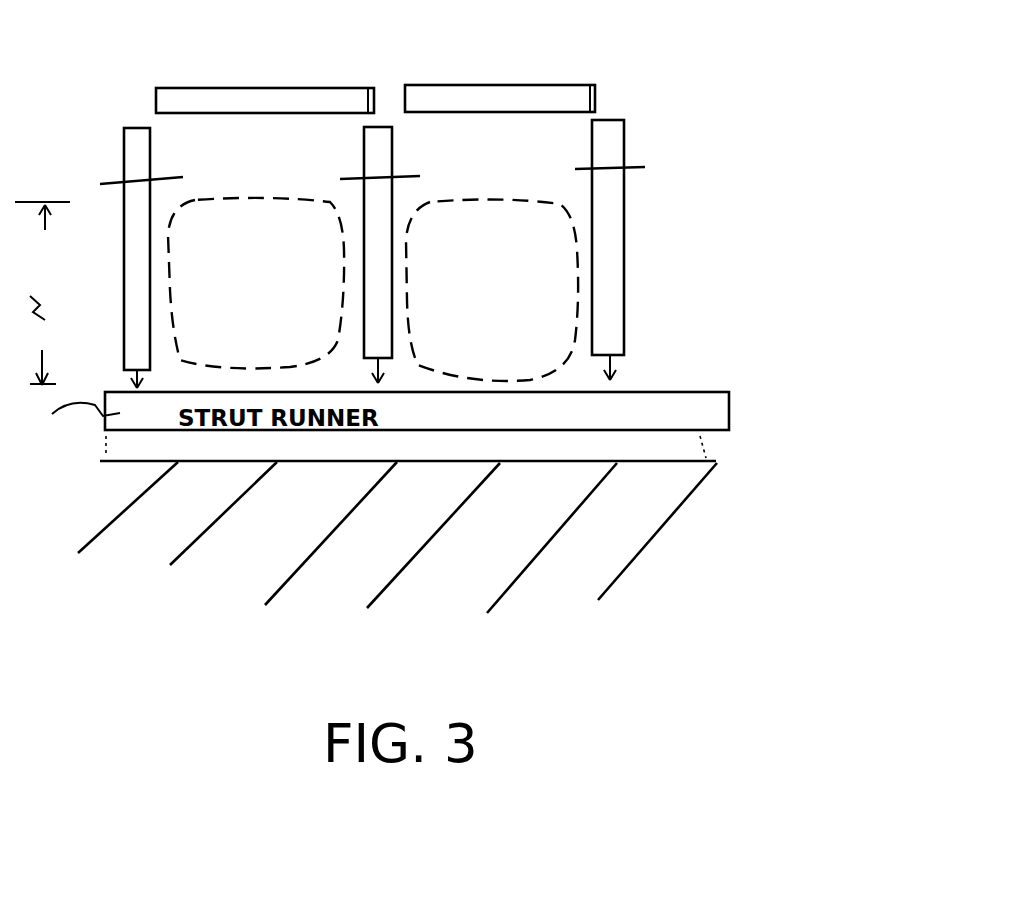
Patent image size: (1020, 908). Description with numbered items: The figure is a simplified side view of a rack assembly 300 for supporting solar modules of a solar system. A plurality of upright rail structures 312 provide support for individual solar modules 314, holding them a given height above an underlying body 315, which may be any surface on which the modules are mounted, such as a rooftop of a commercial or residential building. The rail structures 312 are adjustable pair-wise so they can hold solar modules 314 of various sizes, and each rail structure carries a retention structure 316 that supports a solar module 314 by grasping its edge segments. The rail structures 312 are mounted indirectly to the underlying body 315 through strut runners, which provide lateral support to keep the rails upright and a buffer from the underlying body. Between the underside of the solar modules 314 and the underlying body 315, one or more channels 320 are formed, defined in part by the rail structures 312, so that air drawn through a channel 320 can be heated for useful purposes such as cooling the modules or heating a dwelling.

The rail structure assembly 300 is at (712, 67).
The rail structure 312 is at (122, 244).
The solar module 314 is at (432, 98).
The underlying body 315 is at (398, 562).
The retention structure 316 is at (416, 176).
The channel 320 is at (272, 290).